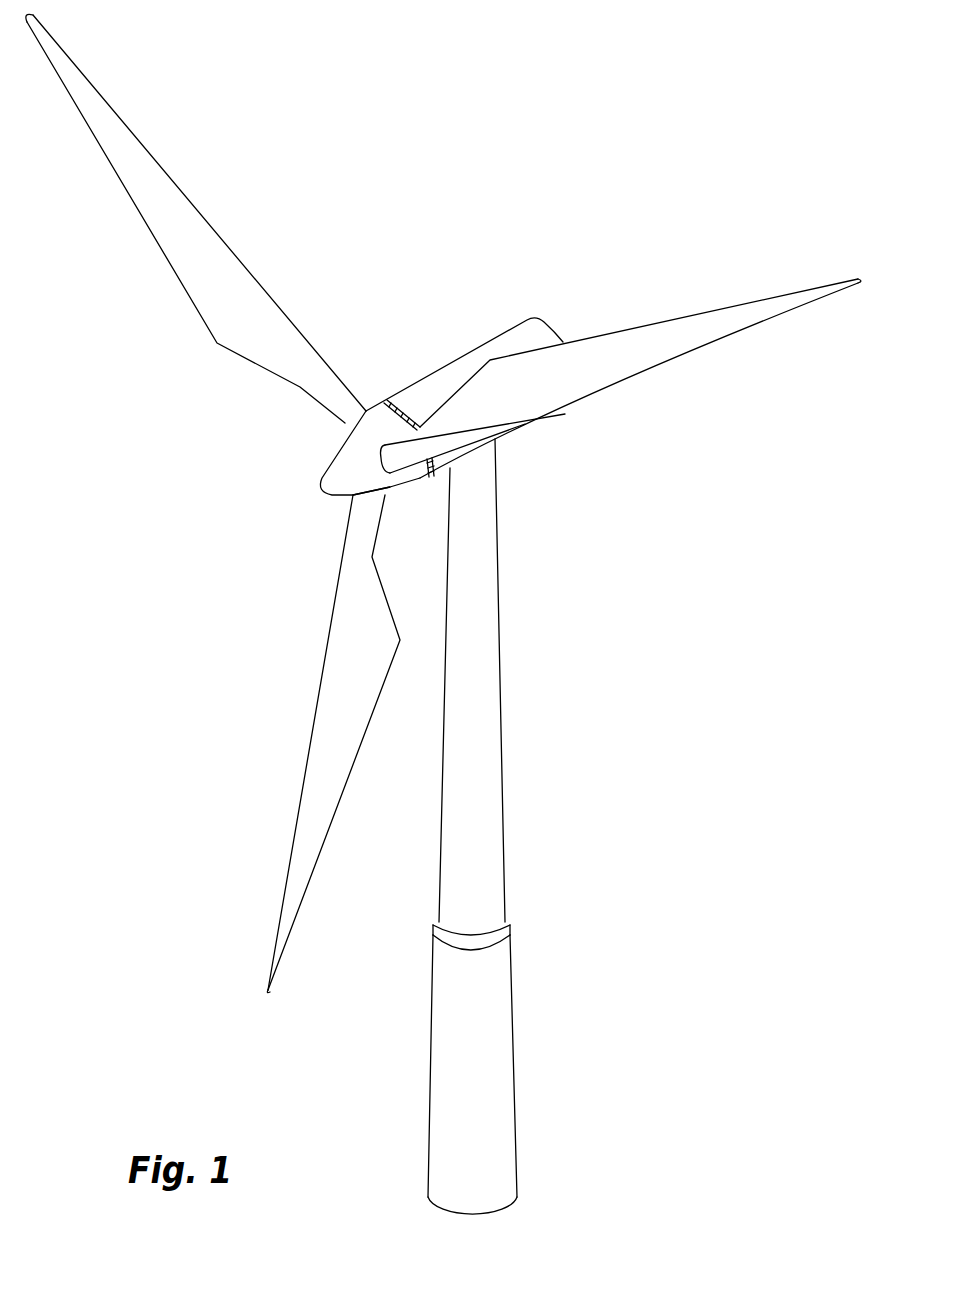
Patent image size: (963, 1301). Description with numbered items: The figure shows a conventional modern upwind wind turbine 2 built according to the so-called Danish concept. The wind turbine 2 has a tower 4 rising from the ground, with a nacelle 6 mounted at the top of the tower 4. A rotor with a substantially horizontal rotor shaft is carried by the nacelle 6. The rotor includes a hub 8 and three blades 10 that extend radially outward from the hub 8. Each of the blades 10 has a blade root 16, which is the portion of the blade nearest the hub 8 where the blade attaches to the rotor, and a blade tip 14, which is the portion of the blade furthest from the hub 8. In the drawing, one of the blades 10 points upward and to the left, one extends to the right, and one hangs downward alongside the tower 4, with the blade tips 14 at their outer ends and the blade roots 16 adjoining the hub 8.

The wind turbine 2 is at (600, 763).
The tower 4 is at (485, 683).
The nacelle 6 is at (433, 383).
The hub 8 is at (344, 469).
The blades 10 is at (228, 318).
The blade tip 14 is at (79, 74).
The blade root 16 is at (350, 423).